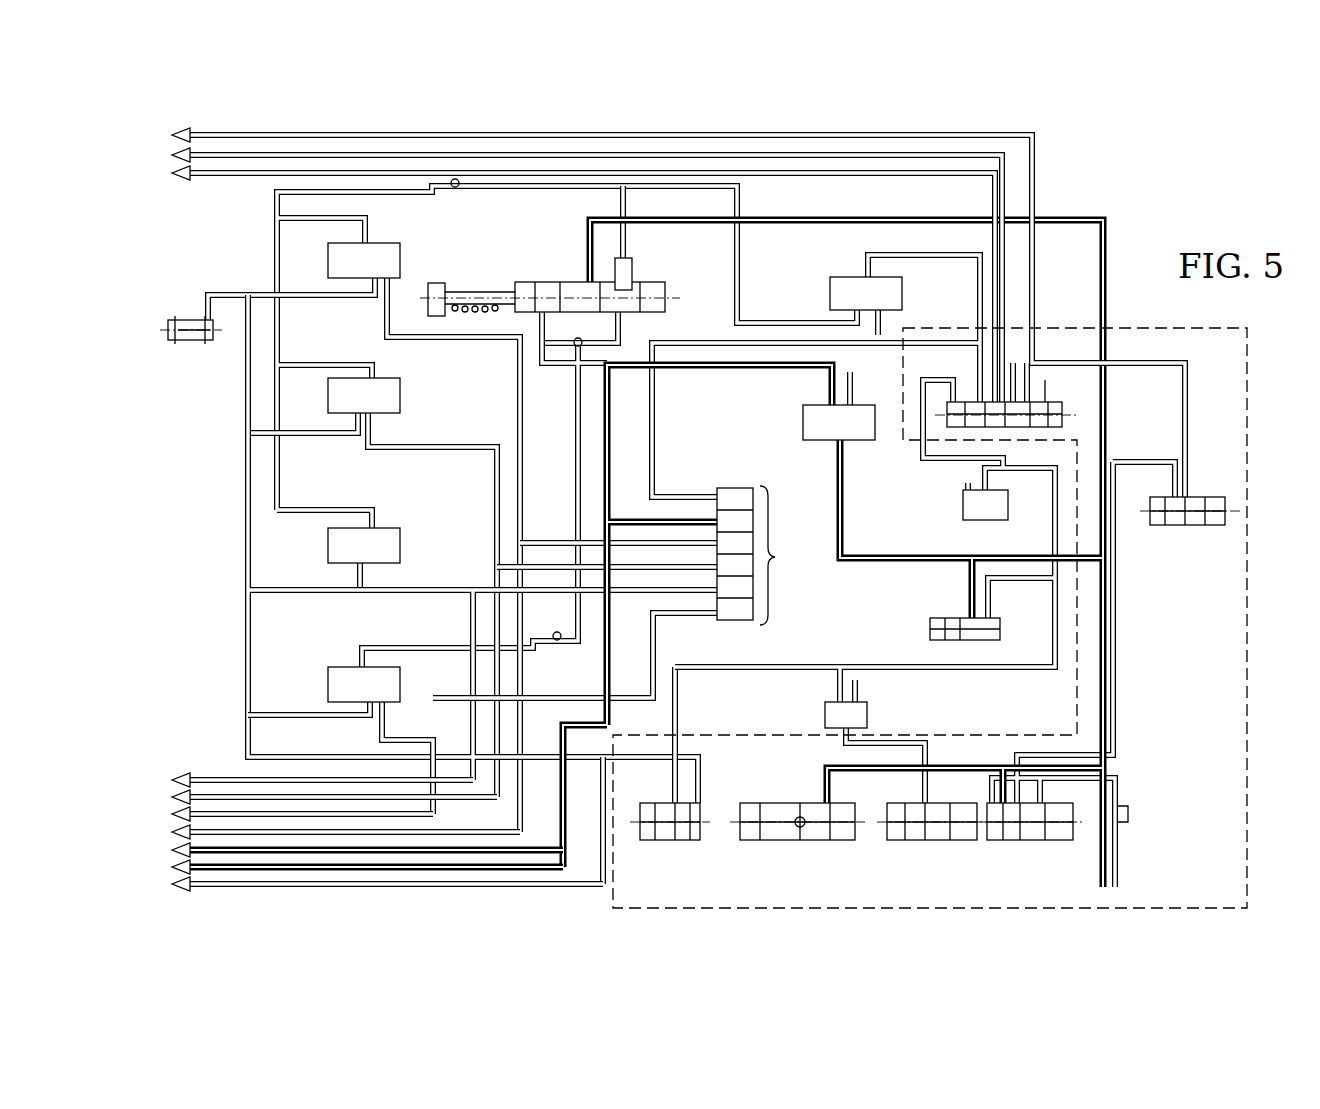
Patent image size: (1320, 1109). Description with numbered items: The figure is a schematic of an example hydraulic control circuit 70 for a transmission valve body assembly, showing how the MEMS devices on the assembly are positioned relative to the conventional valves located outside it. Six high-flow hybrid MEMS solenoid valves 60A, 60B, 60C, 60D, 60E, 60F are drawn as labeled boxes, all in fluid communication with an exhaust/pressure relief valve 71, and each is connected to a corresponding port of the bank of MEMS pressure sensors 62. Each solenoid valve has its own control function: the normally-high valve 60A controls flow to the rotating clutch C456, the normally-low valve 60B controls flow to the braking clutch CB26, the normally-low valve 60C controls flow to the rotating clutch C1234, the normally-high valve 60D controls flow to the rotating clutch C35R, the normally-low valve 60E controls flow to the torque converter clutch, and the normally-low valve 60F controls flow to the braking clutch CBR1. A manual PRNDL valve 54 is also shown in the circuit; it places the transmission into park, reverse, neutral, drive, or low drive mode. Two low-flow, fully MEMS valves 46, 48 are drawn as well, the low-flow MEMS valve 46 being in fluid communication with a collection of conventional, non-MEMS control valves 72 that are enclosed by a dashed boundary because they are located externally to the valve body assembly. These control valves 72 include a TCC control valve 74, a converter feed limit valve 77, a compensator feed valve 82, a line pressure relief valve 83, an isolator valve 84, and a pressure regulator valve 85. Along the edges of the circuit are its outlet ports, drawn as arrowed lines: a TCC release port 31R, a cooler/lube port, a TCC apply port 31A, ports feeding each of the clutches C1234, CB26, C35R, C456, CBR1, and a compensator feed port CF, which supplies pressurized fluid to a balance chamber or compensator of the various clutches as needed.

The TCC release port 31R is at (199, 134).
The TCC apply port 31A is at (199, 177).
The hydraulic control circuit 70 is at (1130, 180).
The exhaust/pressure relief valve 71 is at (182, 307).
The manual PRNDL valve 54 is at (652, 268).
The MEMS solenoid valve 60A is at (385, 271).
The MEMS solenoid valve 60B is at (385, 406).
The MEMS solenoid valve 60C is at (385, 556).
The MEMS solenoid valve 60D is at (385, 695).
The MEMS solenoid valve 60E is at (887, 304).
The MEMS solenoid valve 60F is at (860, 433).
The TCC control valve 74 is at (988, 440).
The low-flow MEMS valve 48 is at (997, 515).
The bank of MEMS pressure sensors 62 is at (759, 555).
The converter feed limit valve 77 is at (1187, 540).
The low-flow MEMS valve 46 is at (858, 725).
The compensator feed valve 82 is at (668, 852).
The line pressure relief valve 83 is at (782, 852).
The isolator valve 84 is at (925, 852).
The pressure regulator valve 85 is at (1028, 852).
The control valves 72 is at (1250, 815).
The rotating clutch C1234 is at (183, 775).
The braking clutch CB26 is at (183, 794).
The rotating clutch C35R is at (183, 812).
The rotating clutch C456 is at (183, 832).
The braking clutch CBR1 is at (183, 851).
The compensator feed port CF is at (183, 887).